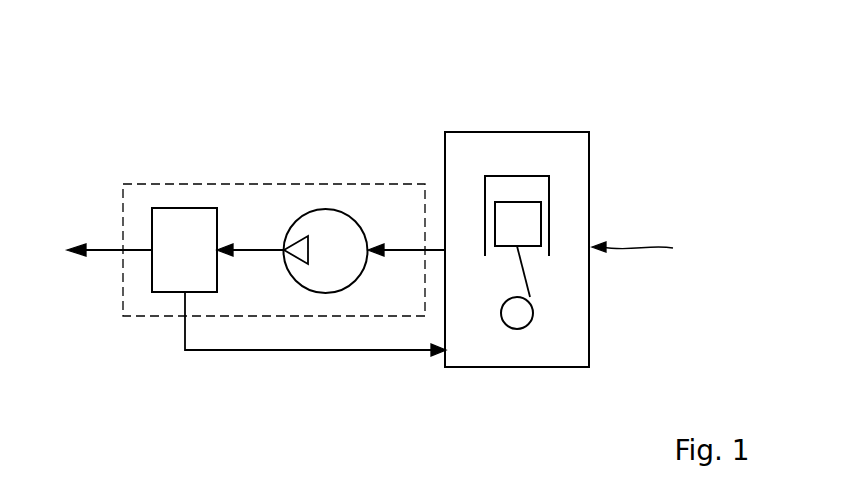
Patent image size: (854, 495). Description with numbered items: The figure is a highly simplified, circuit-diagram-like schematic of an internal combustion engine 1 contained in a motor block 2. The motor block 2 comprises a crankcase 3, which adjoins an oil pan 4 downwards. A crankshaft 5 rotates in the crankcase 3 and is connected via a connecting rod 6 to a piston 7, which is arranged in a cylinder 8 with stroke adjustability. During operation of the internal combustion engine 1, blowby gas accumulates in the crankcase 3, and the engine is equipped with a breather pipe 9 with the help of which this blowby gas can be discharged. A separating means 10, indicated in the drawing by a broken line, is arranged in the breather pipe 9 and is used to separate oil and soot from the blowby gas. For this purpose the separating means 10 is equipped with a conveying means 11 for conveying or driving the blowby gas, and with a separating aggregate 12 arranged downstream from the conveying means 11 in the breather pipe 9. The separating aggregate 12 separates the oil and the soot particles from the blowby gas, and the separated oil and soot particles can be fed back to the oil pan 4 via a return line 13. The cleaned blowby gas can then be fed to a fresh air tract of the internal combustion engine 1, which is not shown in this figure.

The internal combustion engine 1 is at (637, 143).
The motor block 2 is at (641, 248).
The crankcase 3 is at (590, 327).
The oil pan 4 is at (562, 368).
The crankshaft 5 is at (517, 313).
The connecting rod 6 is at (530, 287).
The piston 7 is at (535, 226).
The cylinder 8 is at (535, 189).
The breather pipe 9 is at (101, 247).
The separating means 10 is at (272, 184).
The conveying means 11 is at (324, 208).
The separating aggregate 12 is at (198, 261).
The return line 13 is at (313, 352).